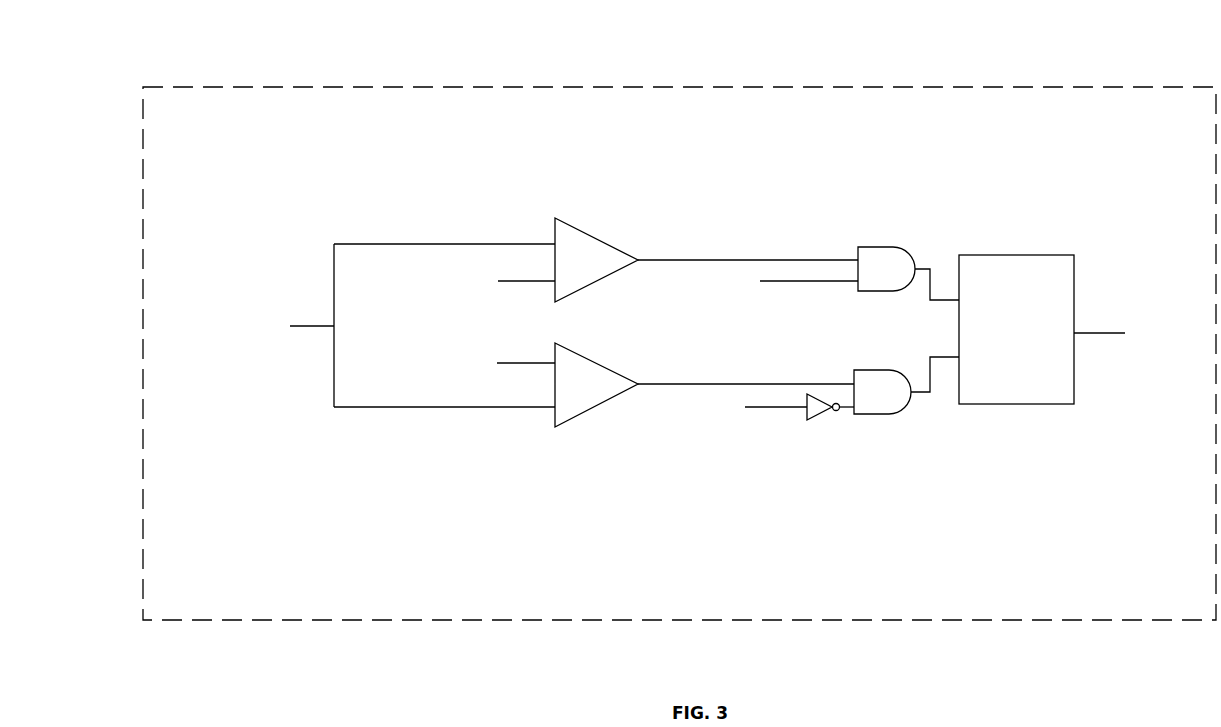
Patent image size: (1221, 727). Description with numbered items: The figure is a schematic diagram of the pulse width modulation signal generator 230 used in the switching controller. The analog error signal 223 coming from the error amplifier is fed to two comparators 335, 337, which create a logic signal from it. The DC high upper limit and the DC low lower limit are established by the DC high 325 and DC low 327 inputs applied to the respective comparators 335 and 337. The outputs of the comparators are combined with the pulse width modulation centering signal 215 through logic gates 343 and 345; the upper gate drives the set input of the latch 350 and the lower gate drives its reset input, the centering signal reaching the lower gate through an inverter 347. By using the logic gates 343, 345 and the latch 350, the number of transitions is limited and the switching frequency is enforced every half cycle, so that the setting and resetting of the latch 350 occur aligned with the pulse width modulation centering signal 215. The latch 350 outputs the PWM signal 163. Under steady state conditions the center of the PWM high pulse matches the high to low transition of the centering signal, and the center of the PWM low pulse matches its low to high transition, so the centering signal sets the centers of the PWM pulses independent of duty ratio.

The pulse width modulation signal generator 230 is at (662, 62).
The analog error signal 223 is at (371, 325).
The DC high input 325 is at (461, 282).
The DC low input 327 is at (462, 364).
The comparator 335 is at (600, 228).
The comparator 337 is at (583, 427).
The pulse width modulation centering signal 215 is at (748, 370).
The logic gate 343 is at (908, 284).
The logic gate 345 is at (906, 402).
The inverter 347 is at (822, 420).
The latch 350 is at (1004, 354).
The PWM signal 163 is at (1139, 347).